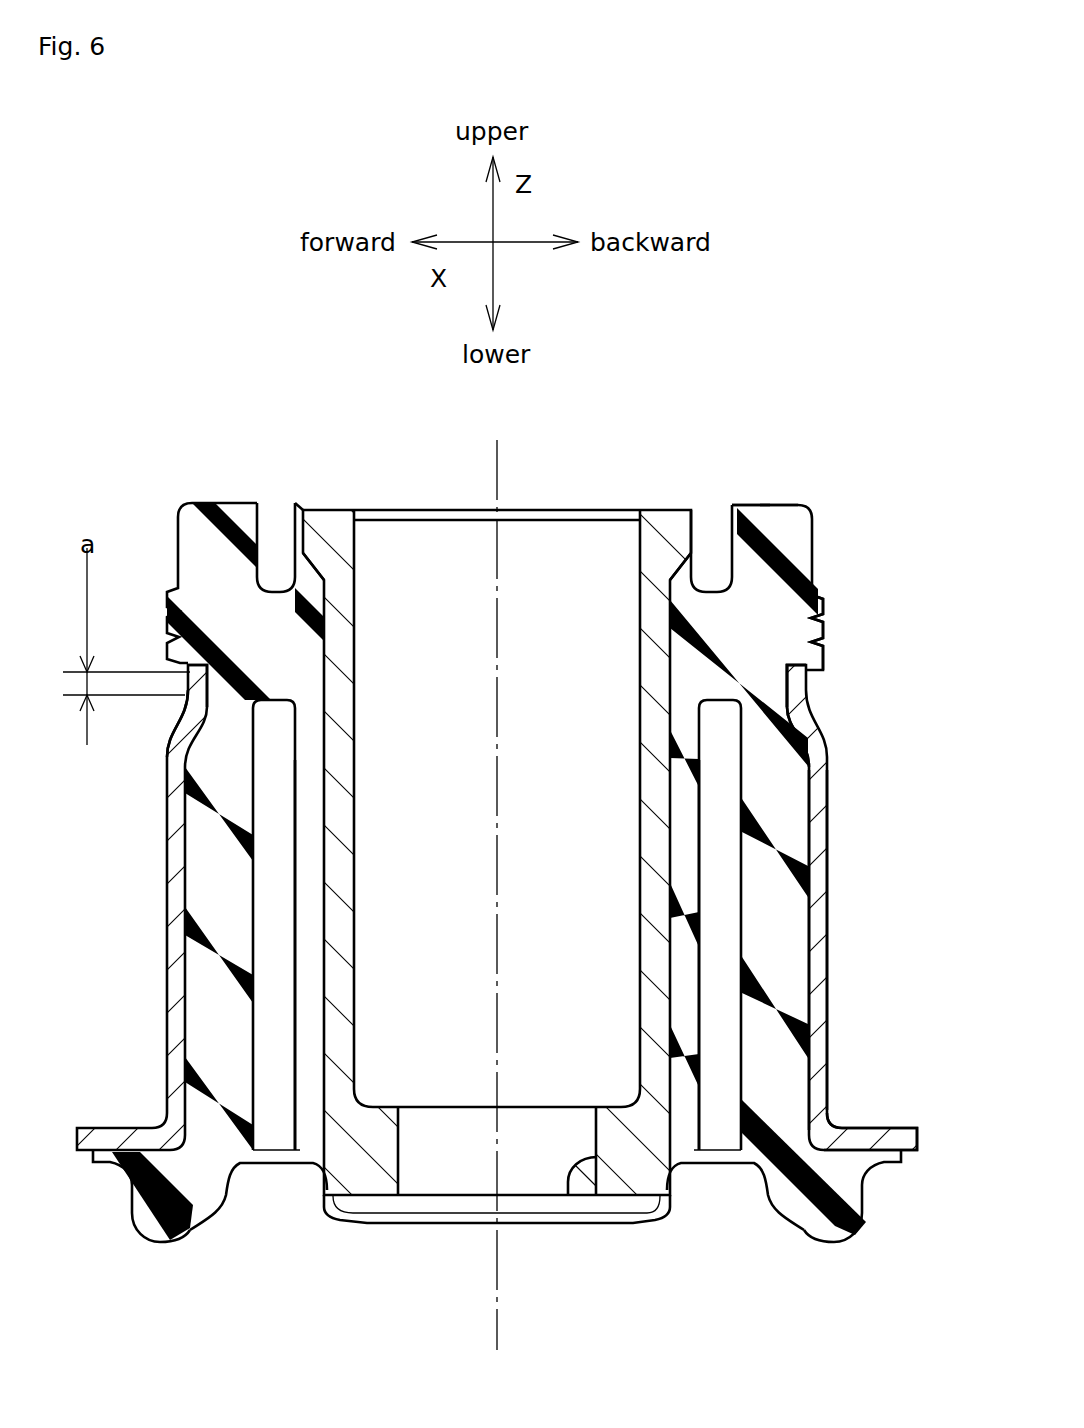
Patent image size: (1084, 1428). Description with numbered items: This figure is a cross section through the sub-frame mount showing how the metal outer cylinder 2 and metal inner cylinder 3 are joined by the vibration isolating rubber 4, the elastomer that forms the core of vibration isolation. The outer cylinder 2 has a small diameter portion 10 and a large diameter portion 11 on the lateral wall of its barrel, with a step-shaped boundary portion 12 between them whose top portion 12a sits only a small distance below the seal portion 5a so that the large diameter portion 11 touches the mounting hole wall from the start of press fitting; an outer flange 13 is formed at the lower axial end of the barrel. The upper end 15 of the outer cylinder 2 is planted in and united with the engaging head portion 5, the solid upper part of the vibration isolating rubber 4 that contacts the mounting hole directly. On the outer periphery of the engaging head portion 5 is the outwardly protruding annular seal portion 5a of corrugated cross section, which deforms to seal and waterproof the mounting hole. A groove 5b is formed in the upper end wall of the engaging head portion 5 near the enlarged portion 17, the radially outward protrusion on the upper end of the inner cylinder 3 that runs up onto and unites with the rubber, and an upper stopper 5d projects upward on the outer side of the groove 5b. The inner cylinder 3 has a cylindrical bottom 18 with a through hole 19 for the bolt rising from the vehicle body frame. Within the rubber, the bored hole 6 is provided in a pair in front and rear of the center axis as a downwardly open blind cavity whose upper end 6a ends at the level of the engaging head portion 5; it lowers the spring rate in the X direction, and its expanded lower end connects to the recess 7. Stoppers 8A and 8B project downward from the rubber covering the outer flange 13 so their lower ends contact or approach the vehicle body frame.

The outer cylinder 2 is at (915, 735).
The inner cylinder 3 is at (350, 632).
The vibration isolating rubber 4 is at (220, 865).
The engaging head portion 5 is at (815, 517).
The seal portion 5a is at (827, 660).
The groove 5b is at (276, 588).
The upper stopper 5d is at (790, 505).
The bored hole 6 is at (270, 1017).
The upper end of bored hole 6a is at (298, 760).
The recess 7 is at (252, 1162).
The stopper 8A is at (153, 1220).
The stopper 8B is at (460, 1213).
The small diameter portion 10 is at (190, 680).
The large diameter portion 11 is at (828, 830).
The boundary portion 12 is at (803, 690).
The top portion 12a is at (188, 697).
The outer flange 13 is at (893, 1135).
The upper end of outer cylinder 15 is at (802, 663).
The enlarged portion 17 is at (343, 527).
The cylindrical bottom 18 is at (363, 1123).
The through hole 19 is at (568, 1195).